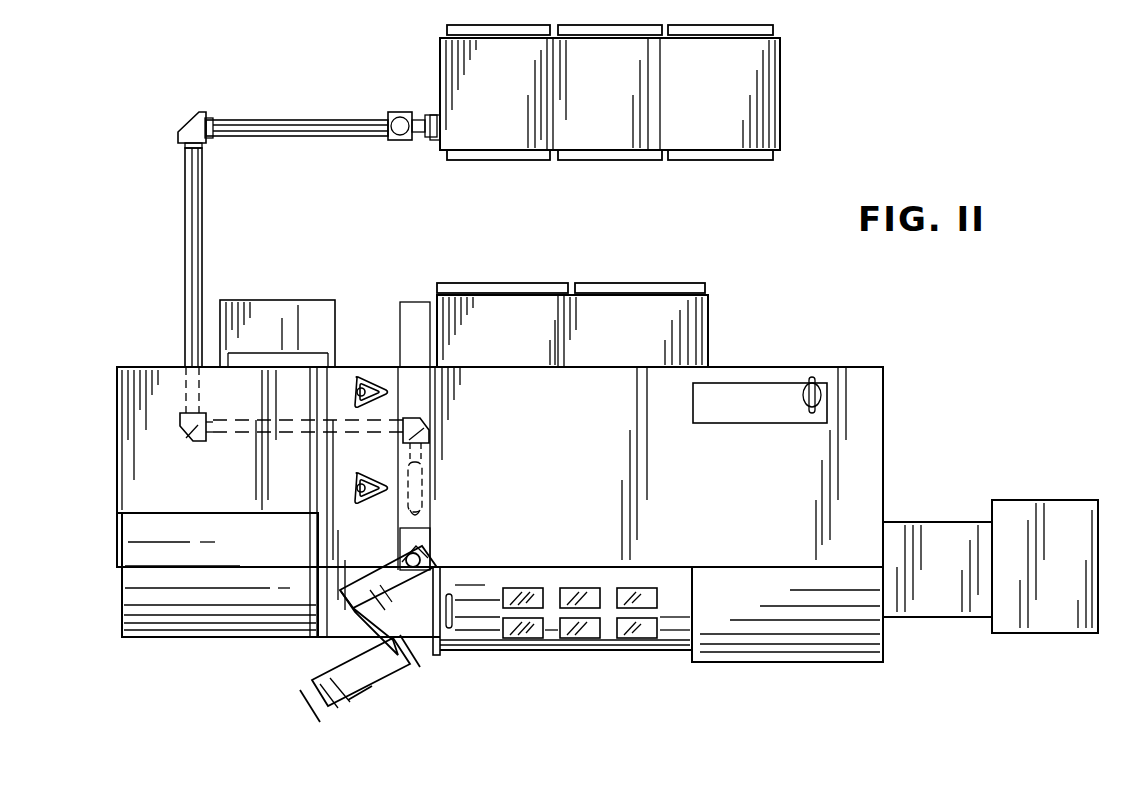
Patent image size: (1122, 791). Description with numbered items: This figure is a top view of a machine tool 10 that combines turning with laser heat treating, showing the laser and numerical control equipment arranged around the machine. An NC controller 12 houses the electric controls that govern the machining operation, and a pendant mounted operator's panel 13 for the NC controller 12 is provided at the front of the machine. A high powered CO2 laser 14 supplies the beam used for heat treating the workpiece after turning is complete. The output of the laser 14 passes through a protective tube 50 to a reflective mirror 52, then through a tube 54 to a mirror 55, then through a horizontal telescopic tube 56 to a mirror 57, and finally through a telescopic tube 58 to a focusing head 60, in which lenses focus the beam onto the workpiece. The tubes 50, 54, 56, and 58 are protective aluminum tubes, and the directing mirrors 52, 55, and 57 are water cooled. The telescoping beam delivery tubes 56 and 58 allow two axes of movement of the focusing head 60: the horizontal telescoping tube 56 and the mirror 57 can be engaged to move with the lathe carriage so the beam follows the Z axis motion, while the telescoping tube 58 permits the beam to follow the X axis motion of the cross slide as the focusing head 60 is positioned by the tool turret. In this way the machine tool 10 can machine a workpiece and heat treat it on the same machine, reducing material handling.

The machine tool 10 is at (626, 703).
The NC controller 12 is at (690, 323).
The operator's panel 13 is at (370, 680).
The laser 14 is at (758, 96).
The tube 50 is at (400, 140).
The reflective mirror 52 is at (400, 112).
The tube 54 is at (198, 240).
The mirror 55 is at (196, 428).
The telescopic tube 56 is at (297, 430).
The mirror 57 is at (431, 425).
The telescopic tube 58 is at (422, 470).
The focusing head 60 is at (422, 512).